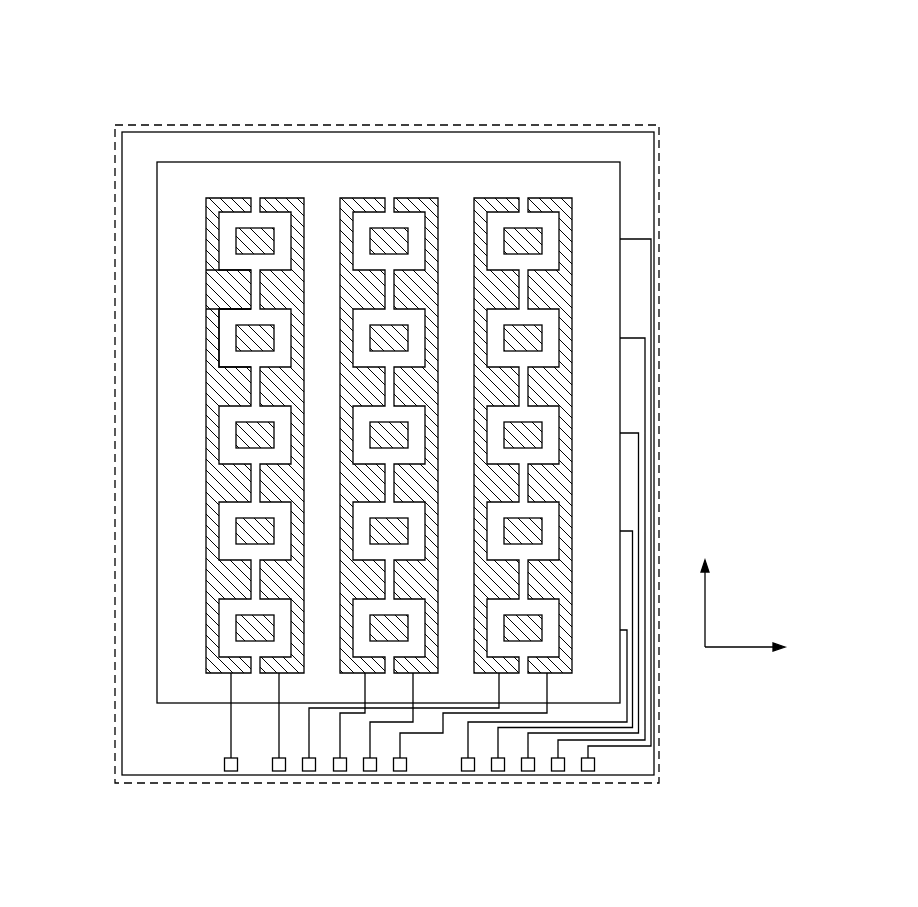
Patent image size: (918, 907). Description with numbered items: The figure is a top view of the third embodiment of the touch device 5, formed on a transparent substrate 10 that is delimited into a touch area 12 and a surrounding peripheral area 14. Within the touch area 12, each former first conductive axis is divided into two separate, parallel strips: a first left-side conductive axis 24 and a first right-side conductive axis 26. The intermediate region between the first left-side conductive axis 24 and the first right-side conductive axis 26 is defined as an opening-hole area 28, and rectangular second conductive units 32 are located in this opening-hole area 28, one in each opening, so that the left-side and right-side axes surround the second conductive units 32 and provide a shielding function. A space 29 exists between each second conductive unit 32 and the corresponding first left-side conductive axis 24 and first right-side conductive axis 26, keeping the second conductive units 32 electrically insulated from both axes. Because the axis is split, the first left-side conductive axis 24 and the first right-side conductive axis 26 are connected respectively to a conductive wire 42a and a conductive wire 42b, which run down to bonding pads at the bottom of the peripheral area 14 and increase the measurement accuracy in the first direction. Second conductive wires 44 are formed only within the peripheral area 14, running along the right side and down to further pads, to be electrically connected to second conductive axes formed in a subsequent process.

The touch panel 5 is at (657, 52).
The peripheral area 14 is at (466, 125).
The second conductive wires 44 is at (659, 297).
The touch area 12 is at (402, 162).
The first left-side conductive axis 24 is at (232, 198).
The first right-side conductive axis 26 is at (289, 198).
The second conductive units 32 is at (238, 238).
The space 29 is at (224, 316).
The opening-hole area 28 is at (222, 362).
The substrate 10 is at (640, 372).
The conductive wire 42a is at (228, 735).
The conductive wire 42b is at (283, 735).